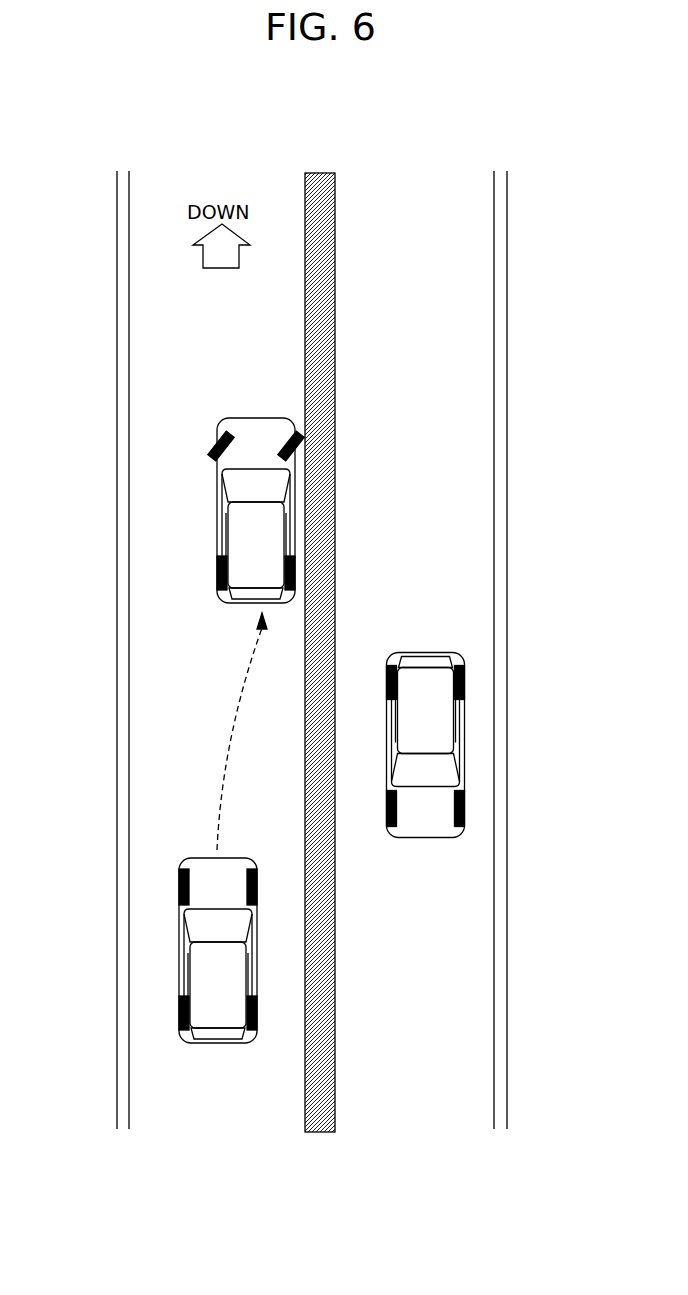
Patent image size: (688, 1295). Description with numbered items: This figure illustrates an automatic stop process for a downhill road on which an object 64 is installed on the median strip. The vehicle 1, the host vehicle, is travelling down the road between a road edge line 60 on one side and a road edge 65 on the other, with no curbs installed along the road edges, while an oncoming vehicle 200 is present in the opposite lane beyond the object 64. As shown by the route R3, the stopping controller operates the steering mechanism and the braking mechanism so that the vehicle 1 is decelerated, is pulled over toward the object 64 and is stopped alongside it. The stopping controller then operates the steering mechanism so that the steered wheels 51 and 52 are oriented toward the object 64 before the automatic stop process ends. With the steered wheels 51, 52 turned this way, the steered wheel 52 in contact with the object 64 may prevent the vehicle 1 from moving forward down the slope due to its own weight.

The vehicle 1 is at (250, 537).
The steered wheel 51 is at (214, 447).
The steered wheel 52 is at (287, 450).
The curb 60 is at (123, 228).
The object 64 is at (337, 215).
The road edge 65 is at (498, 215).
The oncoming vehicle 200 is at (430, 705).
The route R3 is at (232, 731).